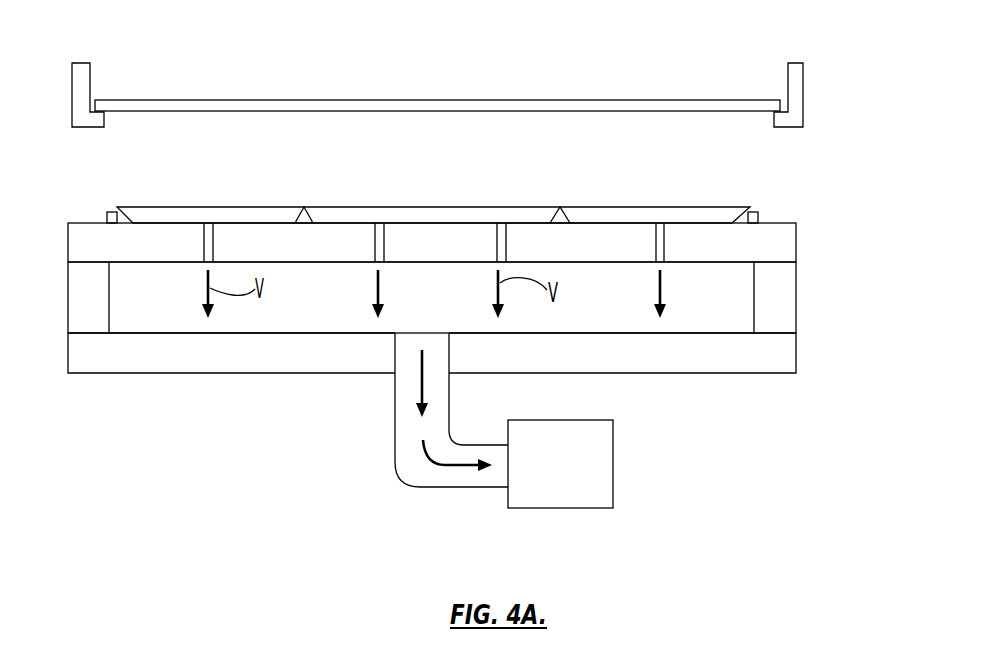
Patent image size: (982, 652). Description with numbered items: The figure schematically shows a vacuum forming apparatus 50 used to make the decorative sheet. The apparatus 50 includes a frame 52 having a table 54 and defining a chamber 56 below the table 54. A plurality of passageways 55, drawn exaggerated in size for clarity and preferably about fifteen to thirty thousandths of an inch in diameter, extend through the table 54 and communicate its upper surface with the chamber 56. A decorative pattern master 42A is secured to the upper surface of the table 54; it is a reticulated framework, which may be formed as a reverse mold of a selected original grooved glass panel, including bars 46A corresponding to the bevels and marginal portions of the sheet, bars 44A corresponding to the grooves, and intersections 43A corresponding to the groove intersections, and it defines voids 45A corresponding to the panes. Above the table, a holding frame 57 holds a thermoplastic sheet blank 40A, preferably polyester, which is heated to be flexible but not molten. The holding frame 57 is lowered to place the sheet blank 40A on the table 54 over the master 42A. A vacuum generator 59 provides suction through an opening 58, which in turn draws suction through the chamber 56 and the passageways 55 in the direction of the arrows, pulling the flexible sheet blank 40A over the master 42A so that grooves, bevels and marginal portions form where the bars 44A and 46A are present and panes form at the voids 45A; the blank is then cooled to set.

The thermoplastic sheet blank 40A is at (584, 107).
The holding frame 57 is at (804, 88).
The decorative pattern master 42A is at (762, 205).
The bars 46A is at (120, 207).
The intersections 43A is at (304, 207).
The bars 44A is at (305, 222).
The voids 45A is at (214, 195).
The table 54 is at (782, 247).
The passageways 55 is at (213, 243).
The chamber 56 is at (726, 305).
The frame 52 is at (768, 362).
The opening 58 is at (397, 338).
The vacuum generator 59 is at (572, 477).
The apparatus 50 is at (83, 411).